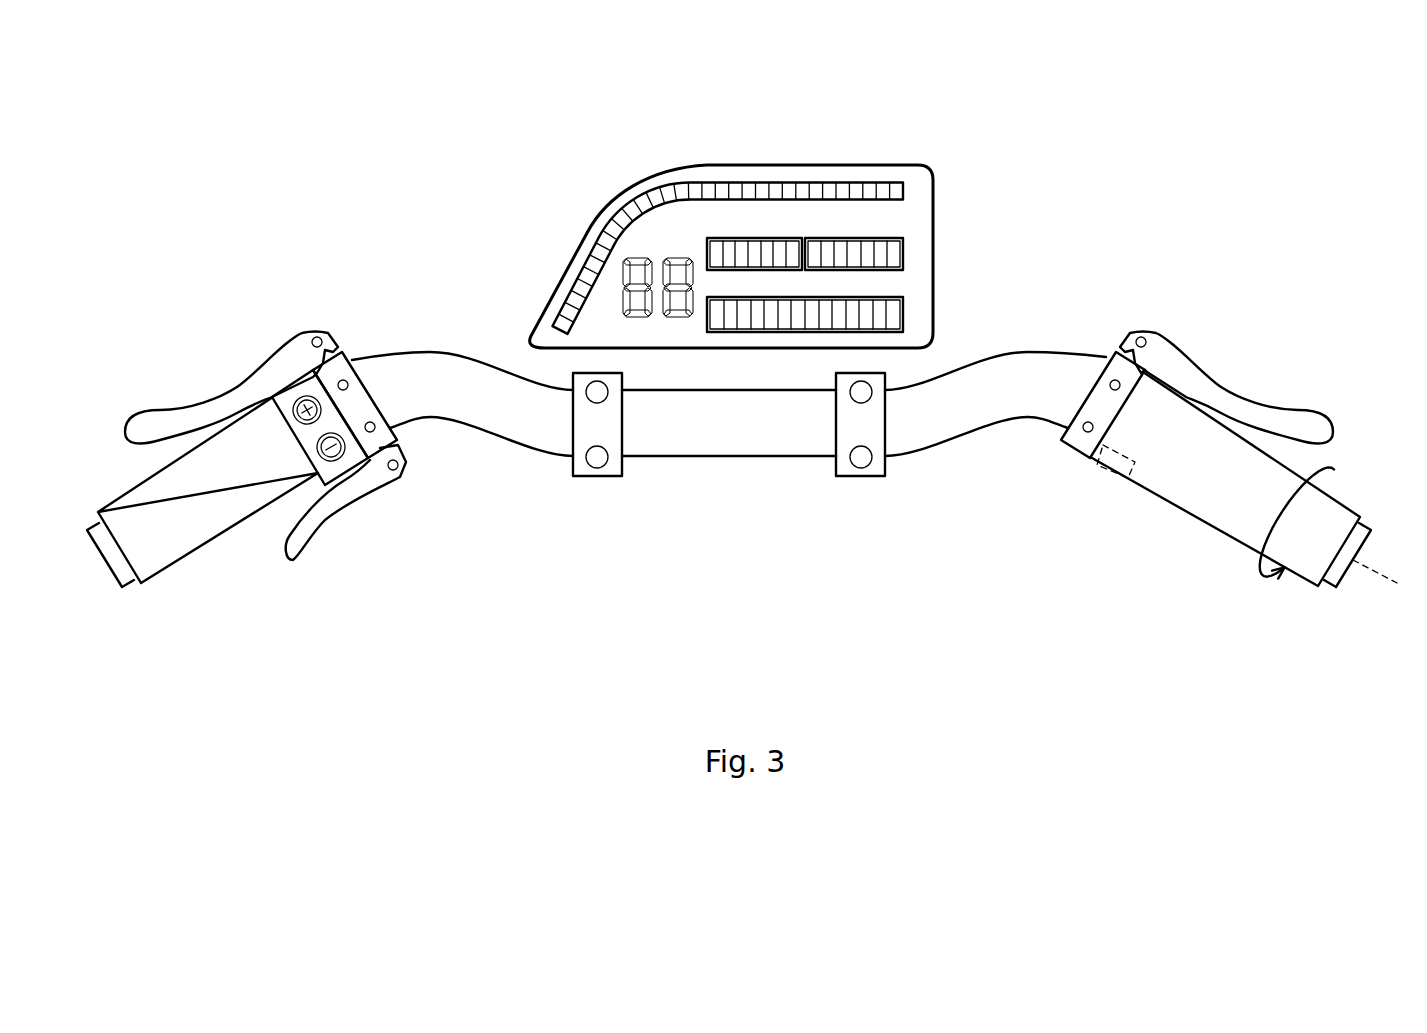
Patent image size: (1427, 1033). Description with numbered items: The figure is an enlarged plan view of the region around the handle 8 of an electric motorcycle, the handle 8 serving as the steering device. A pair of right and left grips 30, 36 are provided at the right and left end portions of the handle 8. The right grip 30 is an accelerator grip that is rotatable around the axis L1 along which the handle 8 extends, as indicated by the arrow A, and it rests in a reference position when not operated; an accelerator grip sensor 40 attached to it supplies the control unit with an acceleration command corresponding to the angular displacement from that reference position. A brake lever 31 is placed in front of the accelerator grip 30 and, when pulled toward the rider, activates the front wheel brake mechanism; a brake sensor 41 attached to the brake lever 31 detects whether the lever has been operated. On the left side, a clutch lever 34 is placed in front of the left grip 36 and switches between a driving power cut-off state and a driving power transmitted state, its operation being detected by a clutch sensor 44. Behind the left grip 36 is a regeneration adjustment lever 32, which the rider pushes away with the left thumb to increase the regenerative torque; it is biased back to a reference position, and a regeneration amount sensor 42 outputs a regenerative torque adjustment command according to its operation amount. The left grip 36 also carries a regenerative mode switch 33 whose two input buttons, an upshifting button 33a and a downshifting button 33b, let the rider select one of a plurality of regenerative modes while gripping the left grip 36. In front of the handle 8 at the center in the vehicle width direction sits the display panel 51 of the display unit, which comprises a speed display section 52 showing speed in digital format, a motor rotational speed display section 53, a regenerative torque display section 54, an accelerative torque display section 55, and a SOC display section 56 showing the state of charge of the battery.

The handle 8 is at (760, 458).
The right grip 30 is at (1240, 544).
The brake lever 31 is at (1223, 385).
The regeneration adjustment lever 32 is at (347, 510).
The regenerative mode switch 33 is at (377, 371).
The upshifting button 33a is at (313, 397).
The downshifting button 33b is at (340, 435).
The clutch lever 34 is at (245, 378).
The left grip 36 is at (213, 540).
The accelerator grip sensor 40 is at (1113, 480).
The brake sensor 41 is at (1141, 337).
The regeneration amount sensor 42 is at (393, 470).
The clutch sensor 44 is at (317, 337).
The display panel 51 is at (823, 165).
The speed display section 52 is at (657, 258).
The motor rotational speed display section 53 is at (663, 183).
The regenerative torque display section 54 is at (787, 238).
The accelerative torque display section 55 is at (837, 238).
The SOC display section 56 is at (842, 300).
The rotation direction A is at (1335, 470).
The axis L1 is at (1383, 580).